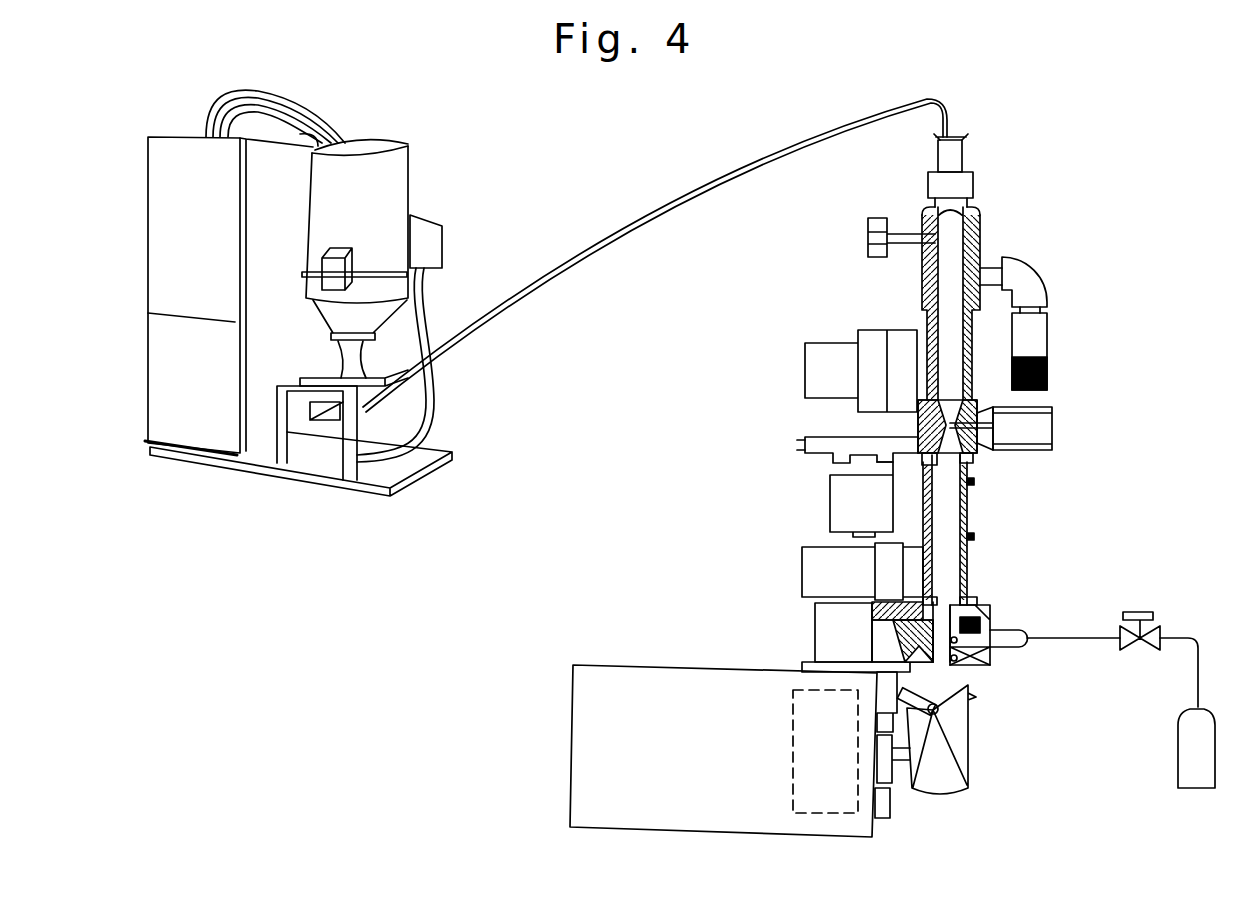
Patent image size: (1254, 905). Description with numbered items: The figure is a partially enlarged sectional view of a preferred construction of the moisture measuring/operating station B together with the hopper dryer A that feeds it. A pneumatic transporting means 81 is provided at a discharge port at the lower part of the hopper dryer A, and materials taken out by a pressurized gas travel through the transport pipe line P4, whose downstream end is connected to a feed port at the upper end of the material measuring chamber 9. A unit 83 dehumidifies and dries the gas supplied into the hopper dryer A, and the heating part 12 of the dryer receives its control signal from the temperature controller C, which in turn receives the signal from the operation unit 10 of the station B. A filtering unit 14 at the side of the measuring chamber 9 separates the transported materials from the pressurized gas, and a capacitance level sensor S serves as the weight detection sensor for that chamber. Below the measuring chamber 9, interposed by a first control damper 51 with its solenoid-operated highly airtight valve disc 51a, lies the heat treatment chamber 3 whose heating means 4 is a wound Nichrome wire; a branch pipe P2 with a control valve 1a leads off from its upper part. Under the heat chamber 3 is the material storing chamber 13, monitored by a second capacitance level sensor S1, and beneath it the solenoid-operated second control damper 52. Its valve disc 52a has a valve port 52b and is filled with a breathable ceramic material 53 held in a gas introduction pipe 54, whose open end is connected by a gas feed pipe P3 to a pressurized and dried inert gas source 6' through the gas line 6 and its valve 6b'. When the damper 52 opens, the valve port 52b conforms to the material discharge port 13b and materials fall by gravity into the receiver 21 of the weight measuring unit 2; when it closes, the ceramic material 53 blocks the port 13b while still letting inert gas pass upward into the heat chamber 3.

The hopper dryer A is at (372, 116).
The dehumidifying and drying unit 83 is at (157, 213).
The heating part 12 is at (443, 222).
The pneumatic transporting means 81 is at (330, 444).
The transport pipe line P4 is at (668, 197).
The moisture measuring/operating station B is at (1025, 188).
The material measuring chamber 9 is at (947, 355).
The filtering unit 14 is at (1048, 368).
The capacitance level sensor S is at (835, 353).
The valve disc 51a is at (915, 422).
The first control damper 51 is at (1043, 430).
The branch pipe P2 is at (806, 442).
The control valve 1a is at (848, 498).
The heat treatment chamber 3 is at (947, 495).
The material storing chamber 13 is at (948, 575).
The heating means 4 is at (973, 480).
The capacitance level sensor S1 is at (820, 567).
The material discharge port 13b is at (970, 602).
The second control damper 52 is at (830, 630).
The valve port 52b is at (965, 672).
The breathable ceramic material 53 is at (1000, 625).
The gas introduction pipe 54 is at (990, 655).
The gas feed pipe P3 is at (1012, 650).
The valve disc 52a is at (932, 690).
The receiver 21 is at (968, 744).
The weight measuring unit 2 is at (947, 804).
The gas pipe 6 is at (1128, 671).
The valve 6b' is at (1162, 618).
The inert gas source 6' is at (1215, 748).
The temperature controller C is at (698, 822).
The operation unit 10 is at (793, 730).